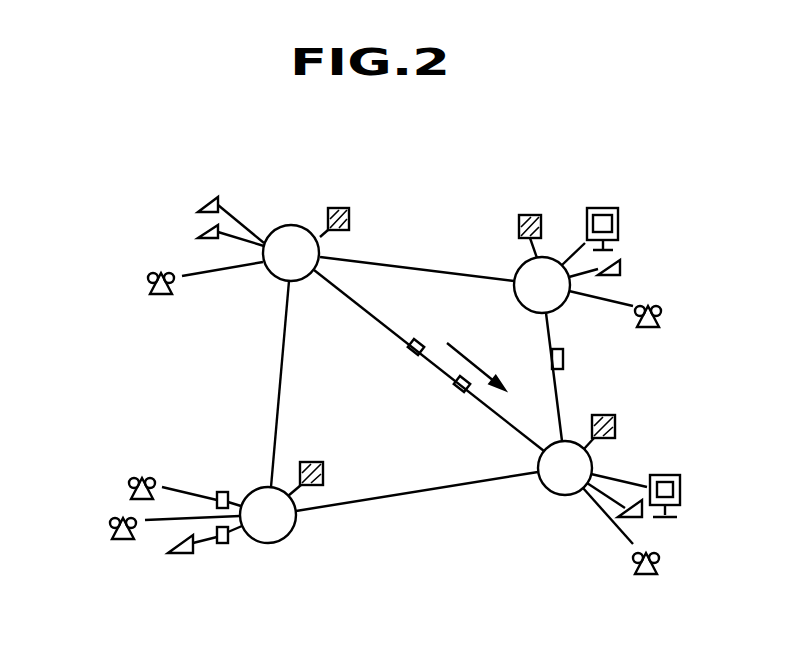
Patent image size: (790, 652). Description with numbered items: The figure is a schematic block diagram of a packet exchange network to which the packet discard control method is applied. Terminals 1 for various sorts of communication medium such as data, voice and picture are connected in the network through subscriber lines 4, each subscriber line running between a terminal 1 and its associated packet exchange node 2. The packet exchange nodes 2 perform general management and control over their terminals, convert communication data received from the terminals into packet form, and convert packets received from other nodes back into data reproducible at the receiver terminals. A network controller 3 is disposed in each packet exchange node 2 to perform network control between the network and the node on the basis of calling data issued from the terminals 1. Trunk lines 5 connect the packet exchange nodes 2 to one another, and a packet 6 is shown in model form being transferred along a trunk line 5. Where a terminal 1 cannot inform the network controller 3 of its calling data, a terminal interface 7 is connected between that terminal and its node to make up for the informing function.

The terminals 1 is at (211, 197).
The packet exchange nodes 2 is at (297, 226).
The network controllers 3 is at (343, 208).
The subscriber lines 4 is at (242, 220).
The trunk lines 5 is at (425, 263).
The packet 6 is at (408, 351).
The terminal interface 7 is at (222, 492).